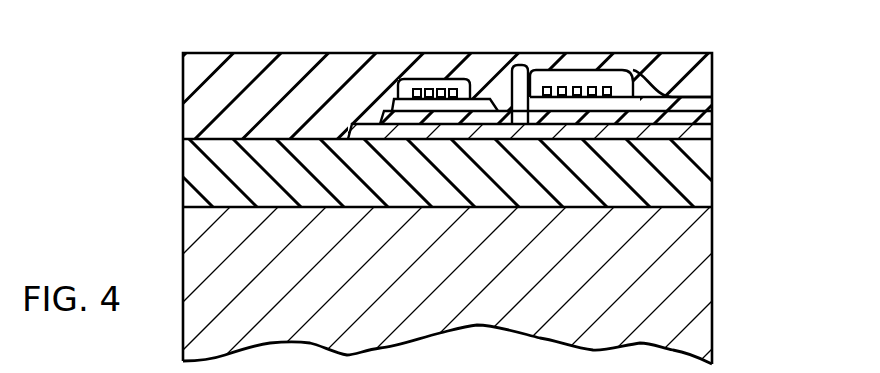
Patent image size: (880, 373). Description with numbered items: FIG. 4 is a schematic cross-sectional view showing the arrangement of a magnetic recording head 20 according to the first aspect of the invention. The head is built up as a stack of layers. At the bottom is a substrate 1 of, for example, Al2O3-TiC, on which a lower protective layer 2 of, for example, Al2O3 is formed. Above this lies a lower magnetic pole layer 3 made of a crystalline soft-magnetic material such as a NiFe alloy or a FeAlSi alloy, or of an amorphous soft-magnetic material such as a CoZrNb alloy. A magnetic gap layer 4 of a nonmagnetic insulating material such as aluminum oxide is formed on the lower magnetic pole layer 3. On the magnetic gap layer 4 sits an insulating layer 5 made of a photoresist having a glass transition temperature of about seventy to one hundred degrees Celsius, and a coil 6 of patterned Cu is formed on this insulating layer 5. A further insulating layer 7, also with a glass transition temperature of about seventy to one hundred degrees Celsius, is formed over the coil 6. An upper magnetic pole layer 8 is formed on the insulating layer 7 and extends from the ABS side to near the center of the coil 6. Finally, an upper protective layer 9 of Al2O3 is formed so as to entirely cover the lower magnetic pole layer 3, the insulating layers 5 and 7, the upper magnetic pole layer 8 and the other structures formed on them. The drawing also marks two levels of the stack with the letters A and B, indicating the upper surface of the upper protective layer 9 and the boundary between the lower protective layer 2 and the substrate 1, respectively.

The substrate 1 is at (698, 290).
The lower protective layer 2 is at (707, 168).
The lower magnetic pole layer 3 is at (707, 135).
The magnetic gap layer 4 is at (707, 115).
The insulating layer 5 is at (628, 82).
The coil 6 is at (597, 85).
The insulating layer 7 is at (553, 57).
The upper magnetic pole layer 8 is at (521, 53).
The upper protective layer 9 is at (183, 90).
The magnetic head 20 is at (145, 132).
The section position A is at (713, 53).
The section position B is at (713, 207).